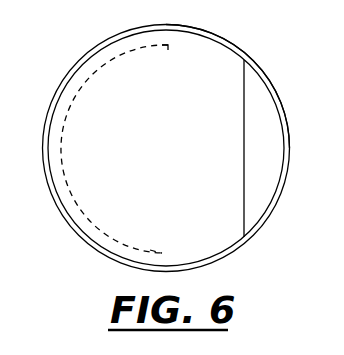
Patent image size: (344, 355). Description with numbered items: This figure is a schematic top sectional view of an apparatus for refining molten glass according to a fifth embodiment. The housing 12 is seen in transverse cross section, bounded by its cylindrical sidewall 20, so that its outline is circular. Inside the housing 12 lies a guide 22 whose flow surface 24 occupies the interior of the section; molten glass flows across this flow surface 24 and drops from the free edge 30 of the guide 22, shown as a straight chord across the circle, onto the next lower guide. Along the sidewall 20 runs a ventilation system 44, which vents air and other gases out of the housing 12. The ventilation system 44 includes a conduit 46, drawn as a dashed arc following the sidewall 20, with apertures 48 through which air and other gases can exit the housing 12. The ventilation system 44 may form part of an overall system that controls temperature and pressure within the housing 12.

The housing 12 is at (258, 231).
The sidewall 20 is at (97, 50).
The guide 22 is at (237, 50).
The flow surface 24 is at (172, 161).
The free edge 30 is at (245, 152).
The ventilation system 44 is at (153, 75).
The conduit 46 is at (164, 251).
The apertures 48 is at (64, 172).